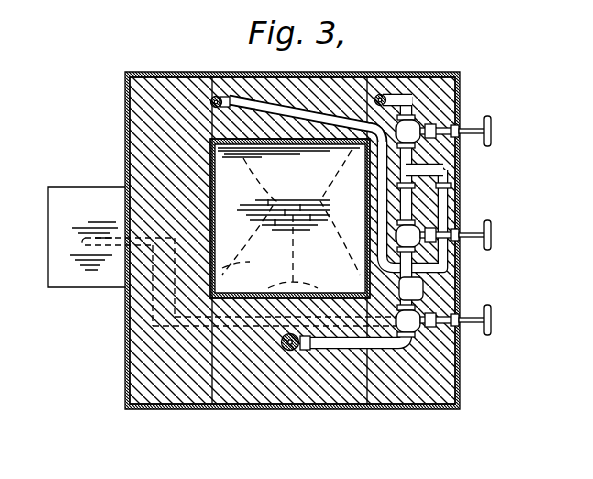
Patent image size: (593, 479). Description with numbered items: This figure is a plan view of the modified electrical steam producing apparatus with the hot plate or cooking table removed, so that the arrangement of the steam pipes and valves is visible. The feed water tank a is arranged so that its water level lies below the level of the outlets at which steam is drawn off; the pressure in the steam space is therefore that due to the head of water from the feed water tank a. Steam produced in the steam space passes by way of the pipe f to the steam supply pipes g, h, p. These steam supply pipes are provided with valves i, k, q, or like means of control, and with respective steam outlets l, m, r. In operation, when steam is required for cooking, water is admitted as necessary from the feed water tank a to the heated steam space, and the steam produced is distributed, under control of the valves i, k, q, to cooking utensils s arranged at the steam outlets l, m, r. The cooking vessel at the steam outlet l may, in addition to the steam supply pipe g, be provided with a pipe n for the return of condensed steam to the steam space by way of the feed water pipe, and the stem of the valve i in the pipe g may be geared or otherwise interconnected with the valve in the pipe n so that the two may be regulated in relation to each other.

The feed water tank a is at (86, 237).
The steam outlet m is at (216, 96).
The steam supply pipe h is at (326, 128).
The steam outlet r is at (362, 138).
The cooking utensils s is at (289, 189).
The valve k is at (397, 236).
The pipe n is at (246, 310).
The steam supply pipe p is at (398, 96).
The valve q is at (418, 124).
The pipe f is at (458, 172).
The steam supply pipe g is at (460, 270).
The valve i is at (418, 330).
The steam outlet l is at (288, 351).